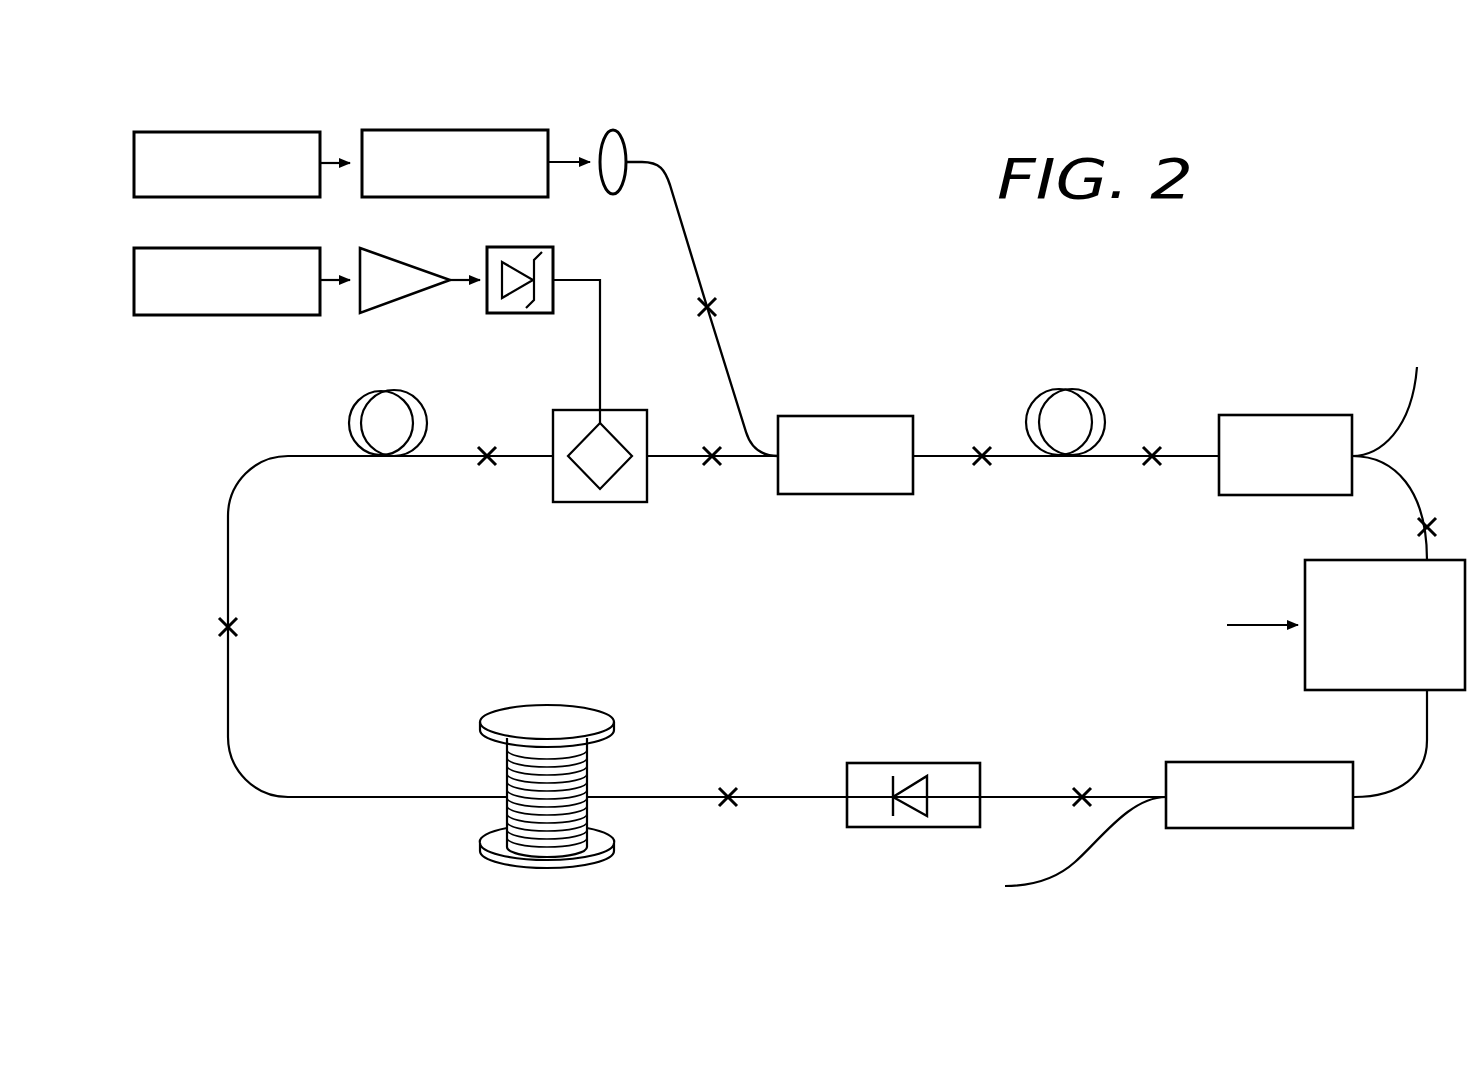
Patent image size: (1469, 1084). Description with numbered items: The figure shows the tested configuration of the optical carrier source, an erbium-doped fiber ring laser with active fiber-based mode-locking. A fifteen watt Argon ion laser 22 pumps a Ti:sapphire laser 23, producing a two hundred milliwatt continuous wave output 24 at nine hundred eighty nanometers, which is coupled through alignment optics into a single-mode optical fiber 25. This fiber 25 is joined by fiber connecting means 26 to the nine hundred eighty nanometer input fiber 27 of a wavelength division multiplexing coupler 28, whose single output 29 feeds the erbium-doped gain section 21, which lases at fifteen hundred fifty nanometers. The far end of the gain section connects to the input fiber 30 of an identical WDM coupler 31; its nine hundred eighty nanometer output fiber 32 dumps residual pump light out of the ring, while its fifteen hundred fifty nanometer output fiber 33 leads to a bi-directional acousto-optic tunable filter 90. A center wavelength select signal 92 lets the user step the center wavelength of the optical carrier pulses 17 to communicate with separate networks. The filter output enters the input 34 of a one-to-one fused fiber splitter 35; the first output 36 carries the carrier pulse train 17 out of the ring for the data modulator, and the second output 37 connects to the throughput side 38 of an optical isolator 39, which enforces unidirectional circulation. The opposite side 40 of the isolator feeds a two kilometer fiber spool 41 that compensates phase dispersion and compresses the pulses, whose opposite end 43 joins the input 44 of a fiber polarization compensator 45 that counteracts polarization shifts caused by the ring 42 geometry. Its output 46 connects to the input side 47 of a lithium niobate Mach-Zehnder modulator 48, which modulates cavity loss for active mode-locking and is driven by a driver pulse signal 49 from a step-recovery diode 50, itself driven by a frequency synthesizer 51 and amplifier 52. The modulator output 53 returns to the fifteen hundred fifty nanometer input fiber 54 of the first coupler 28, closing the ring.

The optical carrier pulses 17 is at (927, 917).
The erbium-doped gain section 21 is at (1045, 458).
The Argon ion laser 22 is at (172, 132).
The Ti:sapphire laser 23 is at (402, 130).
The continuous wave output 24 is at (572, 160).
The single-mode optical fiber 25 is at (689, 236).
The fiber connecting means 26 is at (716, 308).
The 980 nm input fiber 27 is at (724, 360).
The WDM coupler 28 is at (800, 416).
The output of the coupler 29 is at (935, 458).
The input fiber 30 is at (1195, 455).
The WDM coupler 31 is at (1243, 415).
The 980 nm output fiber 32 is at (1414, 395).
The 1550 output fiber 33 is at (1422, 478).
The input of the splitter 34 is at (1400, 780).
The fused fiber splitter 35 is at (1237, 762).
The first output 36 is at (1090, 868).
The second output 37 is at (1120, 796).
The throughput side 38 is at (1003, 796).
The optical isolator 39 is at (858, 827).
The opposite side of the optical isolator 40 is at (797, 796).
The fiber spool 41 is at (495, 725).
The ring 42 is at (262, 513).
The opposite end of the fiber spool 43 is at (245, 780).
The input of the fiber polarization compensator 44 is at (232, 497).
The fiber polarization compensator 45 is at (398, 393).
The output of the fiber polarization compensator 46 is at (445, 455).
The input side of the modulator 47 is at (512, 455).
The Mach-Zehnder modulator 48 is at (638, 410).
The driver pulse signal 49 is at (619, 233).
The step-recovery diode 50 is at (518, 313).
The frequency synthesizer 51 is at (172, 248).
The amplifier 52 is at (396, 263).
The output of the modulator 53 is at (672, 458).
The 1550 nm input fiber 54 is at (738, 458).
The acousto-optic tunable filter 90 is at (1320, 560).
The center wavelength select signal 92 is at (1252, 623).